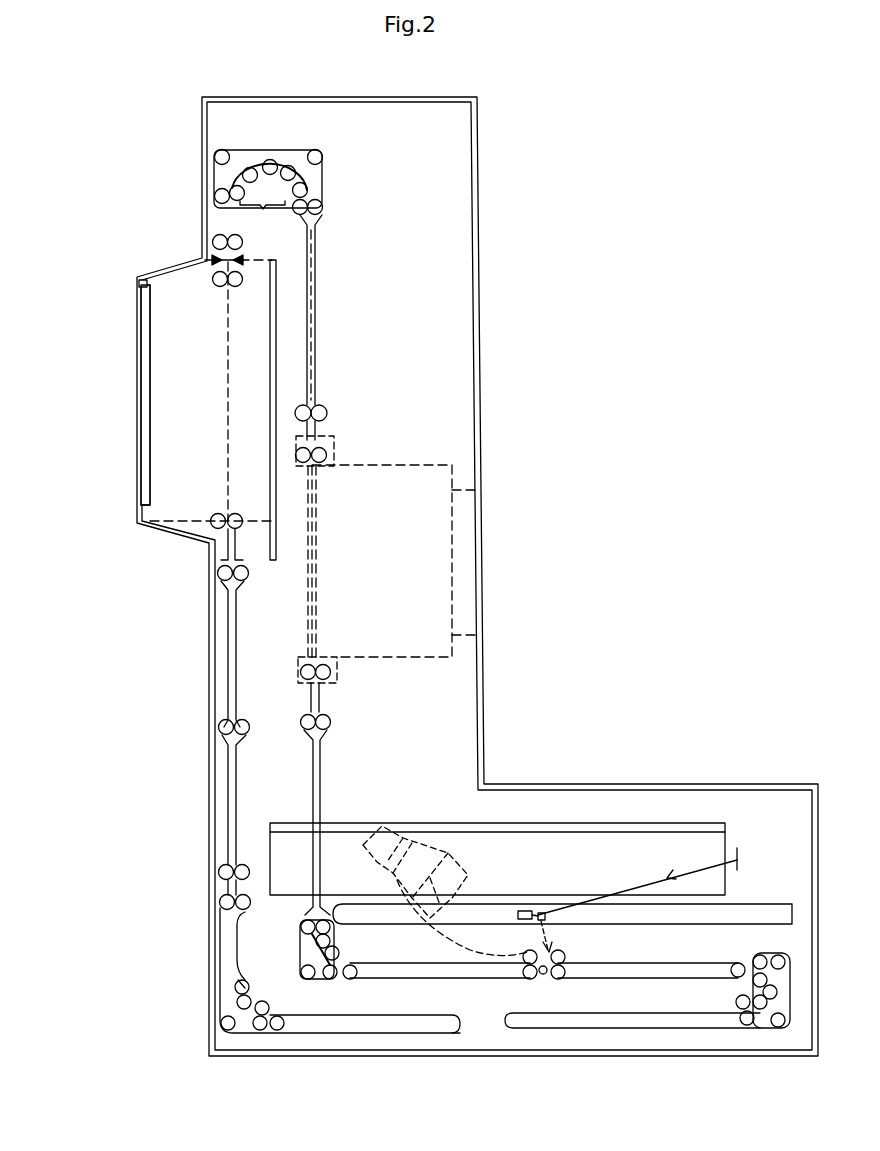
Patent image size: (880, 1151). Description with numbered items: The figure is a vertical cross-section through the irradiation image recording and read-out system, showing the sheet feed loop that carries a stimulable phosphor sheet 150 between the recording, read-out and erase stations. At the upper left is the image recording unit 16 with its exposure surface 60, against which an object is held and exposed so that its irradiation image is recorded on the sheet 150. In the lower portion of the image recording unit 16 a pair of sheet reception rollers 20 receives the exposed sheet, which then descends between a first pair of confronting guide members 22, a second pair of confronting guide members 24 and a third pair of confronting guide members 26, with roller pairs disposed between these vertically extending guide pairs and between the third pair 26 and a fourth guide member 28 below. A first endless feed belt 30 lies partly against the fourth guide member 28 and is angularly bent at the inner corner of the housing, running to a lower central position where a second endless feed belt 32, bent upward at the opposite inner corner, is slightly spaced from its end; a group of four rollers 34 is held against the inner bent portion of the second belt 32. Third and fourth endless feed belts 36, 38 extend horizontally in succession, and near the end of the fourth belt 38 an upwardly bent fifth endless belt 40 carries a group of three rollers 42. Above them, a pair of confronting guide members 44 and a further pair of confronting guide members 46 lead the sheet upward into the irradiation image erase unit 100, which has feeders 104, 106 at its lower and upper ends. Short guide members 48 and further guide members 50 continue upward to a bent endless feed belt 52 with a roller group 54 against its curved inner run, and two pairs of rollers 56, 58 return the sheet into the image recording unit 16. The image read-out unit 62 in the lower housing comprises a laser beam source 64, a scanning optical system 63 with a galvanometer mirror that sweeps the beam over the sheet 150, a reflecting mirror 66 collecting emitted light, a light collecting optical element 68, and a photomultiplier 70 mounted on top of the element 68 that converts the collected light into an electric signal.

The image recording unit 16 is at (172, 403).
The sheet reception rollers 20 is at (210, 520).
The first pair of confronting guide members 22 is at (240, 536).
The second pair of confronting guide members 24 is at (230, 650).
The third pair of confronting guide members 26 is at (230, 795).
The fourth guide member 28 is at (240, 943).
The first endless feed belt 30 is at (228, 985).
The second endless feed belt 32 is at (590, 1035).
The group of four rollers 34 is at (742, 985).
The third endless feed belt 36 is at (667, 968).
The fourth endless feed belt 38 is at (418, 975).
The fifth endless belt 40 is at (310, 958).
The group of three rollers 42 is at (338, 928).
The pair of confronting guide members 44 is at (313, 795).
The pair of confronting guide members 46 is at (320, 704).
The short guide members 48 is at (325, 420).
The guide members 50 is at (315, 312).
The endless feed belt 52 is at (310, 175).
The roller group 54 is at (262, 217).
The pair of rollers 56 is at (214, 236).
The pair of rollers 58 is at (213, 274).
The exposure surface 60 is at (142, 307).
The image read-out unit 62 is at (622, 822).
The scanning optical system 63 is at (541, 911).
The laser beam source 64 is at (574, 873).
The reflecting mirror 66 is at (565, 948).
The light collecting optical element 68 is at (503, 913).
The photomultiplier 70 is at (368, 846).
The irradiation image erase unit 100 is at (452, 556).
The feeder 104 is at (300, 672).
The feeder 106 is at (338, 444).
The stimulable phosphor sheet 150 is at (227, 378).